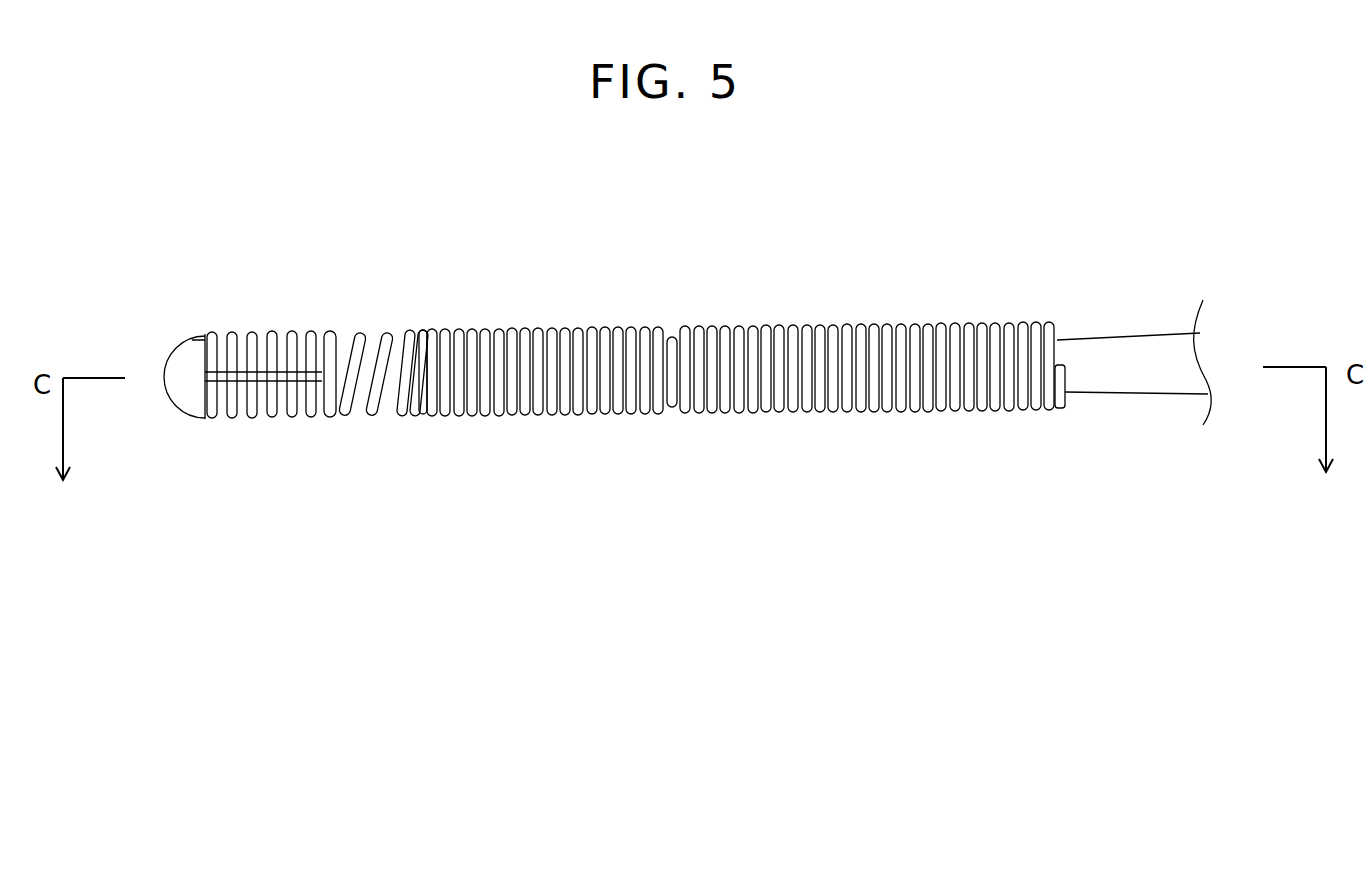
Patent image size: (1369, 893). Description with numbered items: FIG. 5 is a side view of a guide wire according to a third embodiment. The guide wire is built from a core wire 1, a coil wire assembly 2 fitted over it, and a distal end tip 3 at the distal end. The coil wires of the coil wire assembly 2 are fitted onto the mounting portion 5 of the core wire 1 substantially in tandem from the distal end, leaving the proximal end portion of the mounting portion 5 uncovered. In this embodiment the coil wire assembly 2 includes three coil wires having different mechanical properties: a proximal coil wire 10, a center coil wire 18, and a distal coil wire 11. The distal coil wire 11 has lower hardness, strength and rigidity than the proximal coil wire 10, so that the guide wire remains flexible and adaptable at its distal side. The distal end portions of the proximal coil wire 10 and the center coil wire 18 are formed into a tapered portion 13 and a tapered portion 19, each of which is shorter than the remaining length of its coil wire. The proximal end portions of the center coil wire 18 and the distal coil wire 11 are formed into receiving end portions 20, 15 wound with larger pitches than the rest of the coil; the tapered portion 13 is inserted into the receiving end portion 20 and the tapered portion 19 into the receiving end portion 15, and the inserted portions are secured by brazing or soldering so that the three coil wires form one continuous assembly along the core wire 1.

The core wire 1 is at (1162, 307).
The coil wire assembly 2 is at (553, 310).
The distal end tip 3 is at (193, 340).
The mounting portion 5 is at (1092, 350).
The proximal coil wire 10 is at (810, 302).
The distal coil wire 11 is at (288, 307).
The tapered portion 13 is at (687, 340).
The receiving end portion 15 is at (367, 333).
The center coil wire 18 is at (474, 310).
The tapered portion 19 is at (430, 408).
The receiving end portion 20 is at (642, 408).